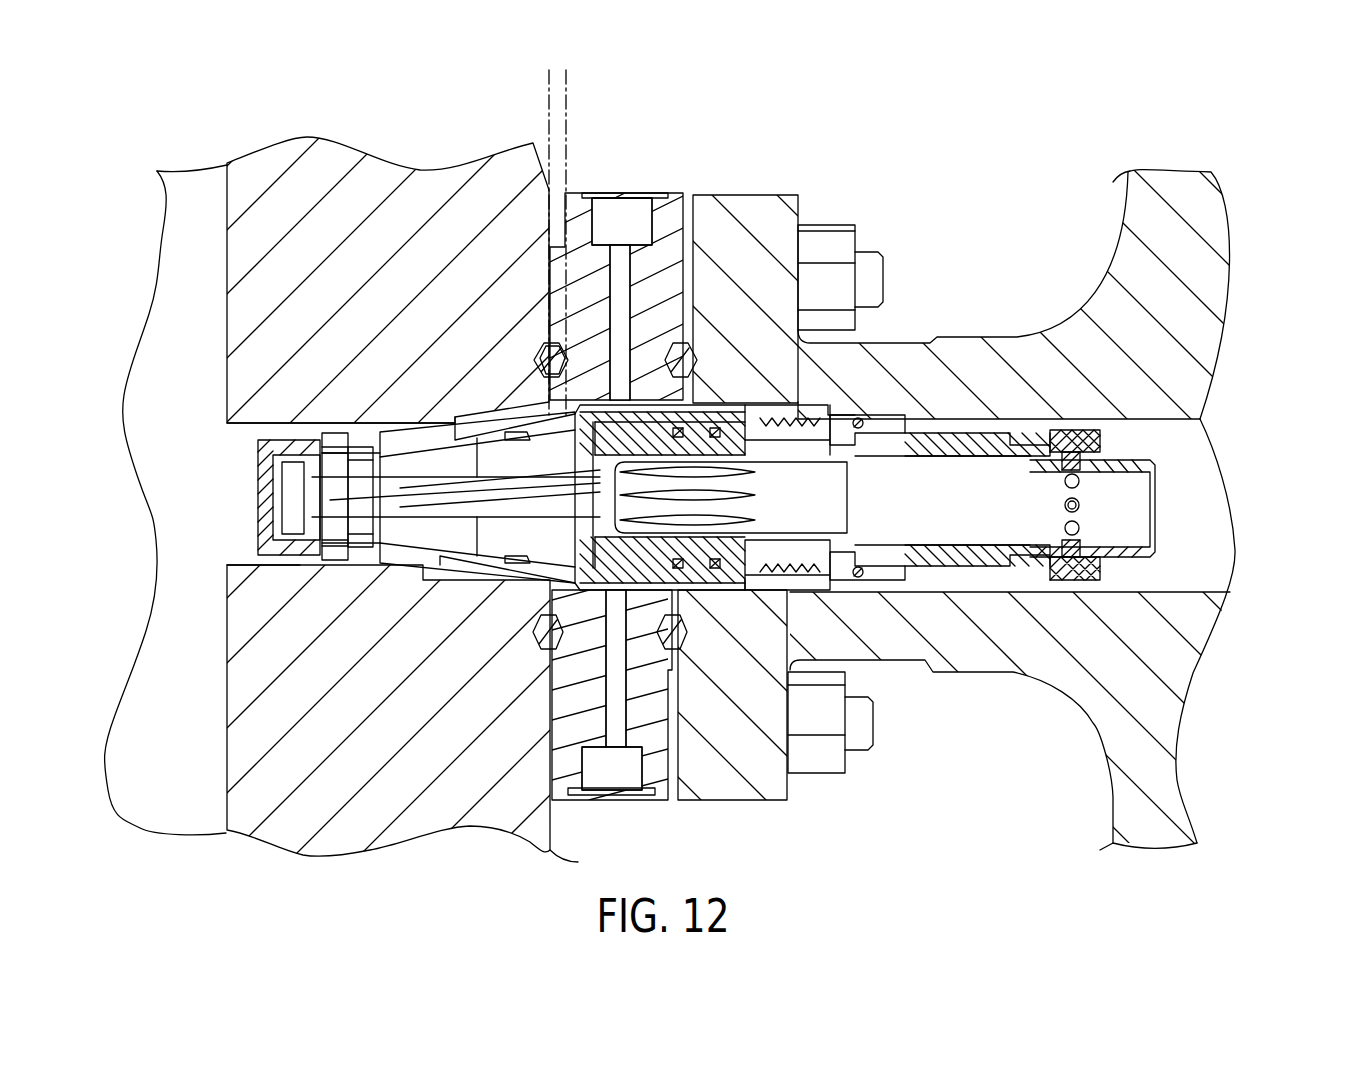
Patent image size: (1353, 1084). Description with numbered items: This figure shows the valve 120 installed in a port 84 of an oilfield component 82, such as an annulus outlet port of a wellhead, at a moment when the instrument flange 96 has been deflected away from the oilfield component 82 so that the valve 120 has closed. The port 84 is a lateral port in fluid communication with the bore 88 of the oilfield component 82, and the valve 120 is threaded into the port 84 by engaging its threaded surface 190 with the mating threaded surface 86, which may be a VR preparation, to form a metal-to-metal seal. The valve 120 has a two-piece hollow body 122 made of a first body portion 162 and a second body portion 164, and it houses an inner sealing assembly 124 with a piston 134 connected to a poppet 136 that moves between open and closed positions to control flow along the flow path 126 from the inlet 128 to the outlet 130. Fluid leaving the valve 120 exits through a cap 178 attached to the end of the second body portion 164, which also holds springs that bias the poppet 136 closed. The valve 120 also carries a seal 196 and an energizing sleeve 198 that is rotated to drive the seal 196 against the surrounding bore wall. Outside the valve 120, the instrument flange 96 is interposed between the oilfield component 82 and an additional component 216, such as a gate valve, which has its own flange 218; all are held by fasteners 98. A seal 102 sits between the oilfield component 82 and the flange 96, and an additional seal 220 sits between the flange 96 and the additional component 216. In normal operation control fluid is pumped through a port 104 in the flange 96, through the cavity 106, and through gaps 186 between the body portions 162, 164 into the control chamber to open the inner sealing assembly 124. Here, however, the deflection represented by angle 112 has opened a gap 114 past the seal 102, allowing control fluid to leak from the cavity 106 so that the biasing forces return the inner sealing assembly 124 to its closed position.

The oilfield component 82 is at (325, 165).
The port 84 is at (247, 564).
The mating threaded surface 86 is at (500, 414).
The bore 88 is at (227, 197).
The flange 96 is at (679, 196).
The fasteners 98 is at (861, 262).
The seal 102 is at (539, 356).
The port 104 is at (630, 258).
The cavity 106 is at (754, 407).
The angle 112 is at (610, 98).
The gap 114 is at (565, 347).
The valve 120 is at (1173, 457).
The hollow body 122 is at (1027, 437).
The inner sealing assembly 124 is at (516, 530).
The flow path 126 is at (770, 497).
The inlet 128 is at (1157, 529).
The outlet 130 is at (343, 438).
The piston 134 is at (738, 570).
The poppet 136 is at (372, 522).
The first body portion 162 is at (951, 459).
The second body portion 164 is at (513, 570).
The cap 178 is at (265, 468).
The gaps 186 is at (818, 577).
The threaded surface 190 is at (500, 417).
The seal 196 is at (859, 418).
The energizing sleeve 198 is at (949, 425).
The additional component 216 is at (1210, 282).
The flange 218 is at (798, 203).
The additional seal 220 is at (691, 359).